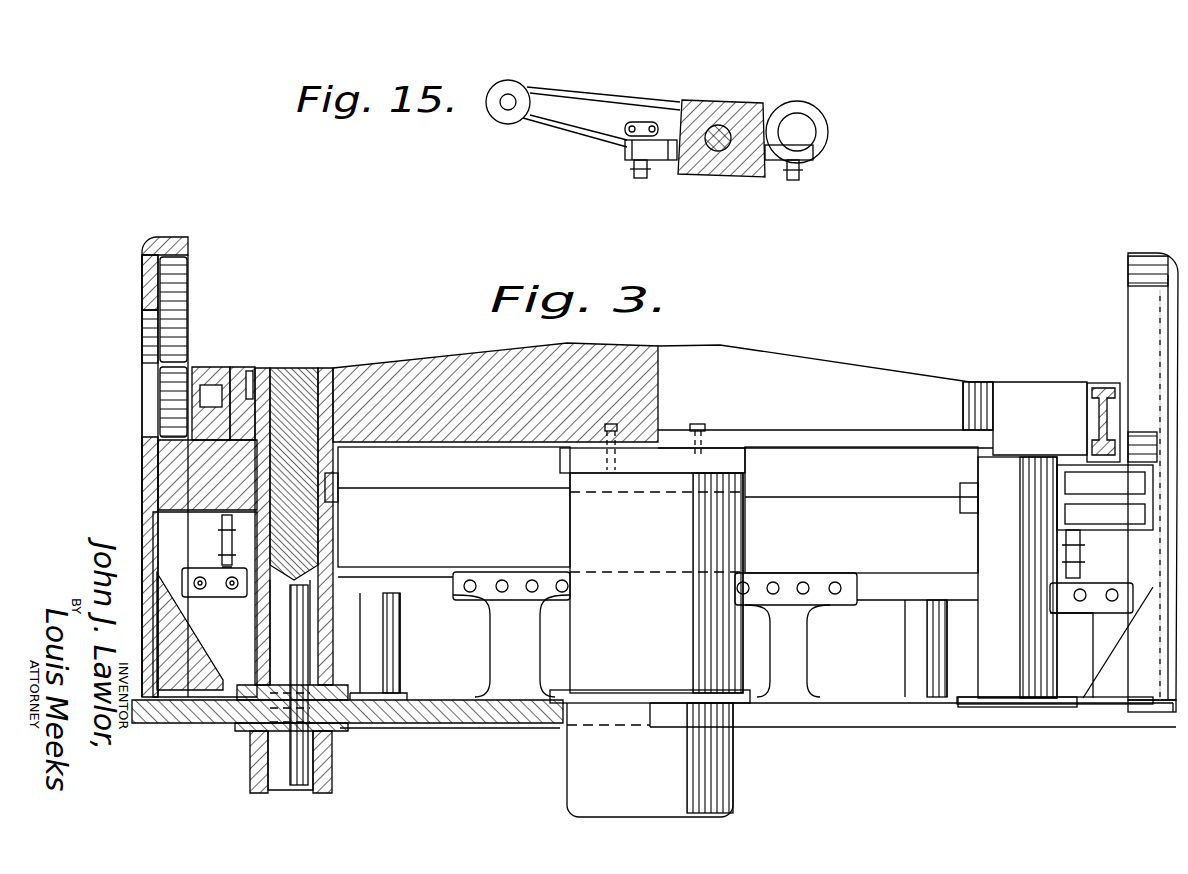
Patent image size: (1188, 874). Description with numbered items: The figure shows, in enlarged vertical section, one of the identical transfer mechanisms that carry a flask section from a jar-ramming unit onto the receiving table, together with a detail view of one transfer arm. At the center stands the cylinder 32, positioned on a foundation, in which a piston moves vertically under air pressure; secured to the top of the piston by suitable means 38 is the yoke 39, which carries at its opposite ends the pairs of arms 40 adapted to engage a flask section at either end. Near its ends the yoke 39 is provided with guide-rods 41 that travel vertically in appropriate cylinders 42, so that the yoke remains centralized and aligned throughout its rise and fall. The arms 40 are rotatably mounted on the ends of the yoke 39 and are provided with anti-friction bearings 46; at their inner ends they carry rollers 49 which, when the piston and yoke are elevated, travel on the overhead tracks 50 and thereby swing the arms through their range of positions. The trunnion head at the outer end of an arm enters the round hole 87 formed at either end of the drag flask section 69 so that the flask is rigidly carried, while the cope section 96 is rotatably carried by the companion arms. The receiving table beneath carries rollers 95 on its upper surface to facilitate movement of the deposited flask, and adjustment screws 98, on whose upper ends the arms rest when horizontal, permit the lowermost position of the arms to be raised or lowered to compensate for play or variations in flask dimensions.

In FIG. 3, the cylinder 32 is at (650, 632).
In FIG. 3, the suitable means 38 is at (700, 426).
In FIG. 15, the yoke 39 is at (725, 110).
In FIG. 3, the yoke 39 is at (460, 367).
In FIG. 15, the arms 40 is at (575, 97).
In FIG. 3, the arms 40 is at (200, 365).
In FIG. 3, the guide-rods 41 is at (338, 530).
In FIG. 3, the cylinders 42 is at (337, 553).
In FIG. 3, the anti-friction bearings 46 is at (217, 370).
In FIG. 15, the rollers 49 is at (825, 130).
In FIG. 3, the rollers 49 is at (167, 390).
In FIG. 3, the overhead tracks 50 is at (167, 337).
In FIG. 3, the flask section 69 is at (648, 601).
In FIG. 3, the round hole 87 is at (222, 550).
In FIG. 3, the rollers 95 is at (232, 592).
In FIG. 3, the cope section 96 is at (651, 523).
In FIG. 15, the adjustment screws 98 is at (632, 175).